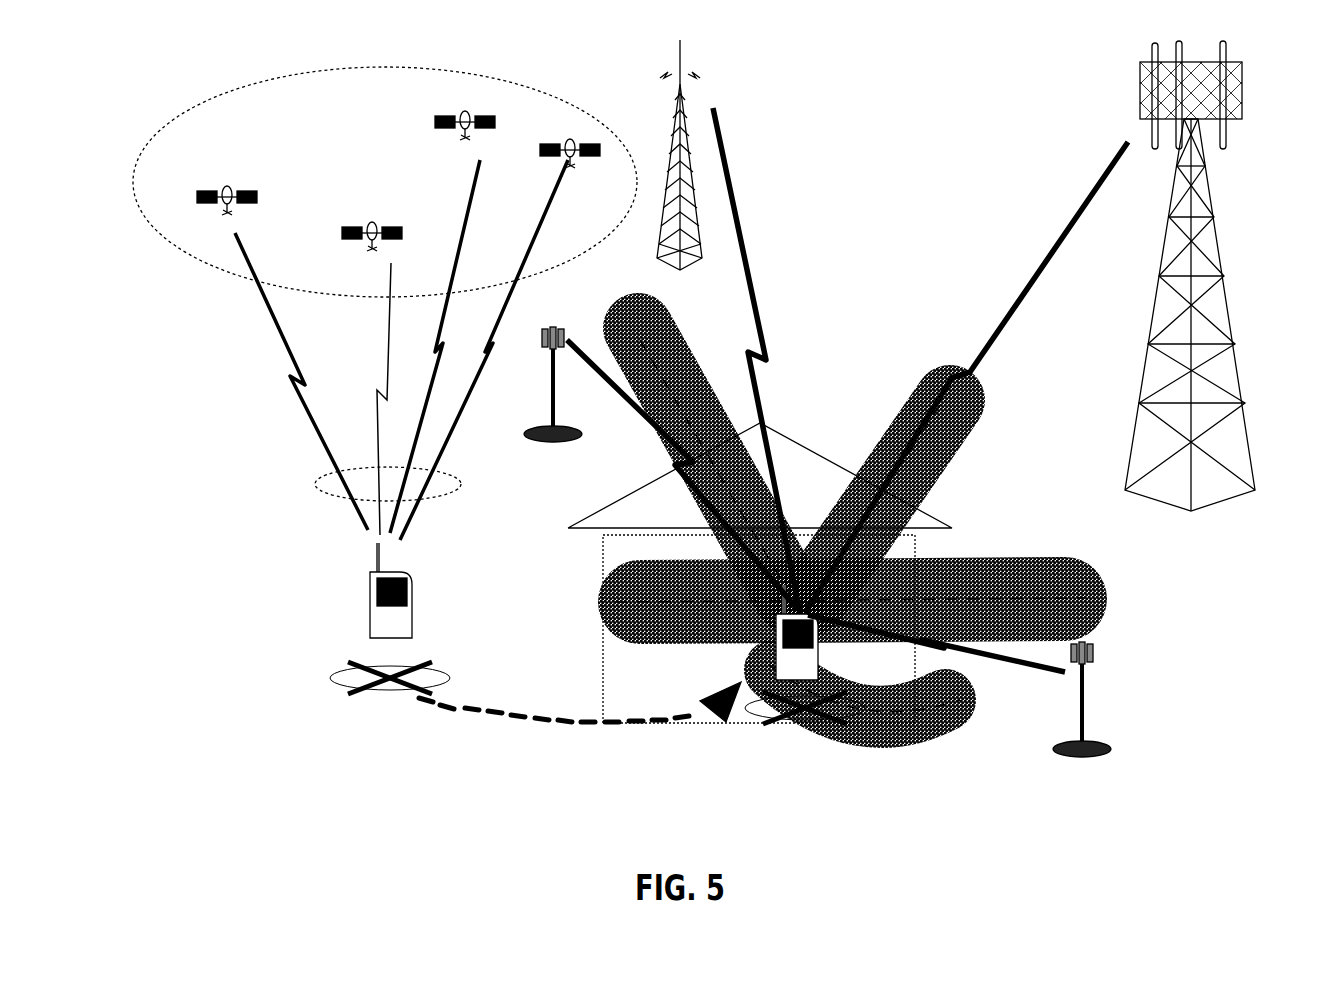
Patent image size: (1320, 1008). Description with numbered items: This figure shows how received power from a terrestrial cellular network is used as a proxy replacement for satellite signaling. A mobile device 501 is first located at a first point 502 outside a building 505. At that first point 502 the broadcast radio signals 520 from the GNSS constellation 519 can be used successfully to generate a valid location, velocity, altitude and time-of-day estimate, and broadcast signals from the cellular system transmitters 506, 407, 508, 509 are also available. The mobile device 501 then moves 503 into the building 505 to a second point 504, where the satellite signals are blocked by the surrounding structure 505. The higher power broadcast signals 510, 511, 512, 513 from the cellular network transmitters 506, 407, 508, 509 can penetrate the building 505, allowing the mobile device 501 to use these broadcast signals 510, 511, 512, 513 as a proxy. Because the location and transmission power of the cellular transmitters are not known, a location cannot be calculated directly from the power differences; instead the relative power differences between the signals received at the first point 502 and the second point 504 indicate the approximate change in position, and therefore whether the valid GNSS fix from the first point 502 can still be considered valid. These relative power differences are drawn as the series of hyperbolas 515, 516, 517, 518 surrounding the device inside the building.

The mobile device 501 is at (597, 611).
The first point 502 is at (390, 700).
The movement 503 is at (580, 725).
The second point 504 is at (805, 730).
The building 505 is at (751, 573).
The cellular system transmitter 506 is at (679, 177).
The wireless access point 407 is at (553, 404).
The cellular system transmitter 508 is at (1082, 721).
The cellular system transmitter 509 is at (1190, 303).
The broadcast signal 510 is at (756, 360).
The broadcast signal 511 is at (966, 377).
The broadcast signal 512 is at (936, 662).
The broadcast signal 513 is at (682, 475).
The hyperbola of relative power difference 515 is at (680, 436).
The hyperbola of relative power difference 516 is at (916, 500).
The hyperbola of relative power difference 517 is at (850, 570).
The hyperbola of relative power difference 518 is at (872, 702).
The GNSS constellation 519 is at (385, 182).
The broadcast radio signals 520 is at (364, 483).